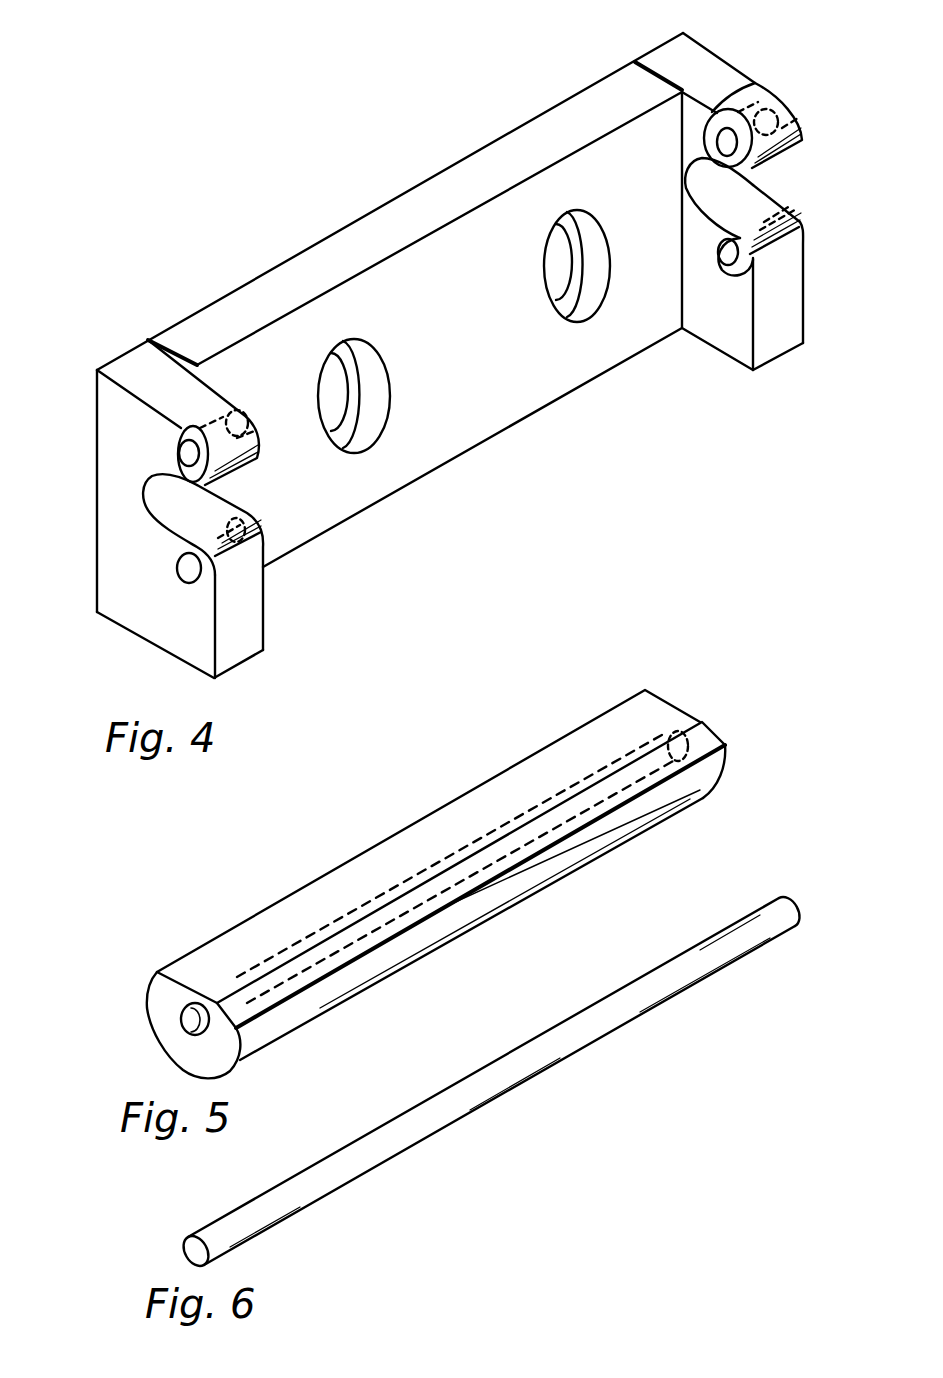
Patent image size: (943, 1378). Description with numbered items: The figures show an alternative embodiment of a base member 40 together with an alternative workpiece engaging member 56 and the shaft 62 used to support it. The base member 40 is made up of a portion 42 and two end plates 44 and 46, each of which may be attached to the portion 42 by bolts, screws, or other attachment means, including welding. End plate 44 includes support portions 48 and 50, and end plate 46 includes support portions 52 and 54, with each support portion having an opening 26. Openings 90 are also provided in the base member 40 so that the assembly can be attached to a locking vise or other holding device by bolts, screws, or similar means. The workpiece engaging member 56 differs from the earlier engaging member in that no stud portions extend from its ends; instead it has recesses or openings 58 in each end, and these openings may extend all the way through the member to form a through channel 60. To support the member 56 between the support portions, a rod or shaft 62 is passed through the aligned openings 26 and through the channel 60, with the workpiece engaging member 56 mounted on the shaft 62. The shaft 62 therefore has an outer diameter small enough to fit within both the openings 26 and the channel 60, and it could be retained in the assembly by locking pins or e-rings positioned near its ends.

In FIG. 4, the base member 40 is at (577, 92).
In FIG. 4, the portion 42 is at (385, 213).
In FIG. 4, the end plate 44 is at (708, 44).
In FIG. 4, the end plate 46 is at (96, 398).
In FIG. 4, the support portion 48 is at (800, 152).
In FIG. 4, the support portion 50 is at (797, 290).
In FIG. 4, the support portion 52 is at (179, 429).
In FIG. 4, the support portion 54 is at (196, 597).
In FIG. 4, the opening 26 is at (755, 83).
In FIG. 4, the openings 90 is at (372, 417).
In FIG. 5, the workpiece engaging member 56 is at (462, 786).
In FIG. 5, the openings 58 is at (190, 1028).
In FIG. 5, the through channel 60 is at (577, 774).
In FIG. 6, the shaft 62 is at (617, 1038).